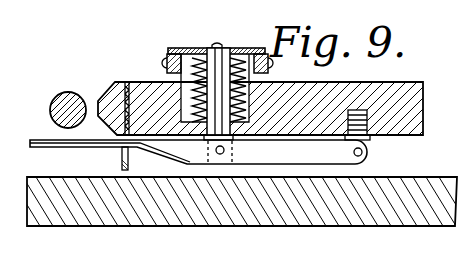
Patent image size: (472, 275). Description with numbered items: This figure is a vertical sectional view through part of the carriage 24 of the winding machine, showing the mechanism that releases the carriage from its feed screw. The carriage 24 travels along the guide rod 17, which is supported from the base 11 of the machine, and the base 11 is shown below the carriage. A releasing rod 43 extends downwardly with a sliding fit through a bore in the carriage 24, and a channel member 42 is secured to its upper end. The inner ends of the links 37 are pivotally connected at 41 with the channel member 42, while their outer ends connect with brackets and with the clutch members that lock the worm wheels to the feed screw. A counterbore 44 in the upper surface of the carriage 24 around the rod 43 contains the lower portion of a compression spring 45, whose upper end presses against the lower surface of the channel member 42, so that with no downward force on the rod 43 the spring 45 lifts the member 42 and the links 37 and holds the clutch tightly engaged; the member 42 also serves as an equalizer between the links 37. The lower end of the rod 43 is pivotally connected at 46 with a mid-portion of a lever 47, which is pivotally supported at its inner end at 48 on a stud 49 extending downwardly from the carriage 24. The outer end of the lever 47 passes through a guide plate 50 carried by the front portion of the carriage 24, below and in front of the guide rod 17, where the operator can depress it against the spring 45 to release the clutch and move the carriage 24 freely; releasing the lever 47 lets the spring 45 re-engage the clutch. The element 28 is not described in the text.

The base 11 is at (417, 185).
The guide rod 17 is at (56, 95).
The carriage 24 is at (395, 88).
The wedge 28 is at (112, 82).
The links 37 is at (170, 48).
The pivotal connection 41 is at (162, 60).
The channel member 42 is at (232, 48).
The releasing rod 43 is at (207, 152).
The counterbore 44 is at (246, 122).
The compression spring 45 is at (202, 79).
The pivotal connection 46 is at (220, 154).
The lever 47 is at (307, 152).
The pivotal support 48 is at (366, 153).
The stud 49 is at (369, 141).
The guide plate 50 is at (121, 156).